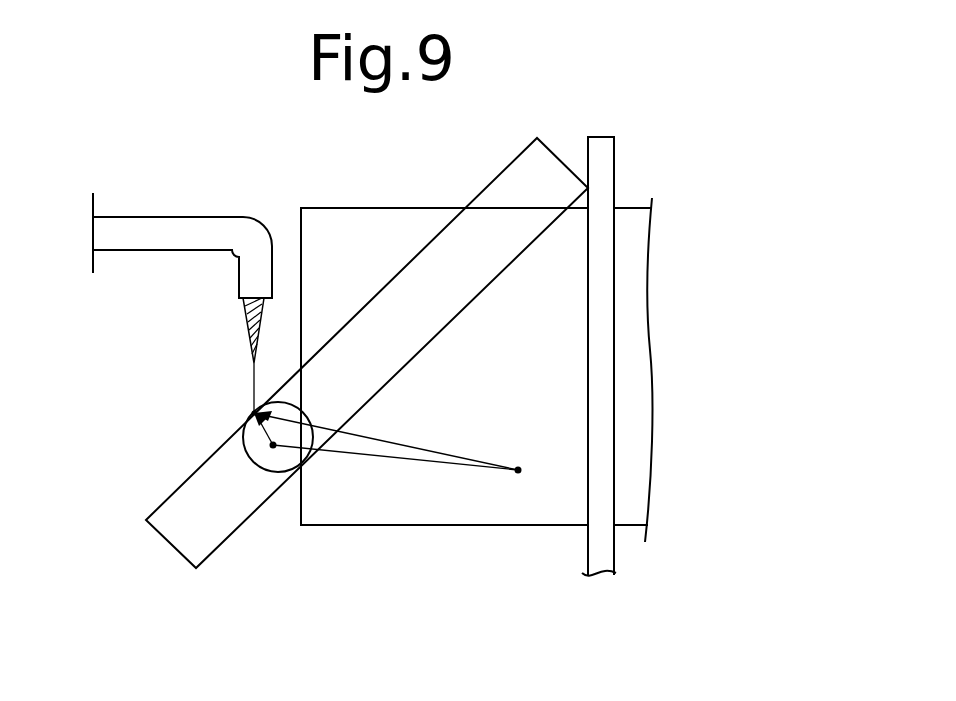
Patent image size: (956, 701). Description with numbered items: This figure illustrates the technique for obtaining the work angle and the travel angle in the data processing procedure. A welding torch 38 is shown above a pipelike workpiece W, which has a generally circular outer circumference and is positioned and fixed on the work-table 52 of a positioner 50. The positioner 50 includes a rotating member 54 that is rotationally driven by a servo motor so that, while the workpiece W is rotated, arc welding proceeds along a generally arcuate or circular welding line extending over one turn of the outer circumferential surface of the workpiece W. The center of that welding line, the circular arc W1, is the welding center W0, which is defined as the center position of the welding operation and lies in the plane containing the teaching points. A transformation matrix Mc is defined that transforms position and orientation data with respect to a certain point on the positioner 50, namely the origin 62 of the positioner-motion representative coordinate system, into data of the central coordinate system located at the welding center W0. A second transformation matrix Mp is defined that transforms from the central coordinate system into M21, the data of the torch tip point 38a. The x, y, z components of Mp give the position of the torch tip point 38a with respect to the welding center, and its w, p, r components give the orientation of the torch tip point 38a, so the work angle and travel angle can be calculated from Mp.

The welding torch 38 is at (226, 314).
The torch tip point 38a is at (252, 412).
The positioner 50 is at (392, 552).
The work-table 52 is at (555, 515).
The rotating member 54 is at (614, 346).
The origin of the positioner-motion representative coordinate system 62 is at (519, 474).
The workpiece W is at (483, 190).
The center of the welding line W0 is at (273, 446).
The circular arc W1 is at (294, 396).
The transformation matrix Mp is at (246, 446).
The transformation matrix Mc is at (395, 469).
The torch tip position/orientation data M21 is at (386, 440).